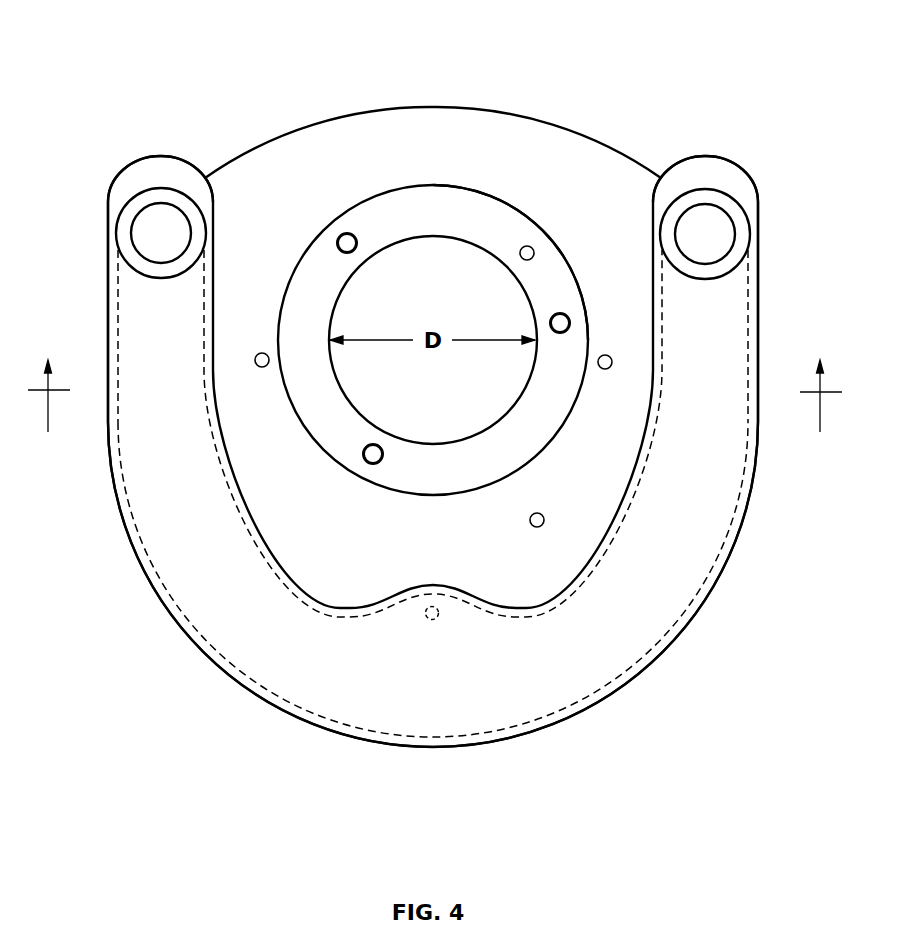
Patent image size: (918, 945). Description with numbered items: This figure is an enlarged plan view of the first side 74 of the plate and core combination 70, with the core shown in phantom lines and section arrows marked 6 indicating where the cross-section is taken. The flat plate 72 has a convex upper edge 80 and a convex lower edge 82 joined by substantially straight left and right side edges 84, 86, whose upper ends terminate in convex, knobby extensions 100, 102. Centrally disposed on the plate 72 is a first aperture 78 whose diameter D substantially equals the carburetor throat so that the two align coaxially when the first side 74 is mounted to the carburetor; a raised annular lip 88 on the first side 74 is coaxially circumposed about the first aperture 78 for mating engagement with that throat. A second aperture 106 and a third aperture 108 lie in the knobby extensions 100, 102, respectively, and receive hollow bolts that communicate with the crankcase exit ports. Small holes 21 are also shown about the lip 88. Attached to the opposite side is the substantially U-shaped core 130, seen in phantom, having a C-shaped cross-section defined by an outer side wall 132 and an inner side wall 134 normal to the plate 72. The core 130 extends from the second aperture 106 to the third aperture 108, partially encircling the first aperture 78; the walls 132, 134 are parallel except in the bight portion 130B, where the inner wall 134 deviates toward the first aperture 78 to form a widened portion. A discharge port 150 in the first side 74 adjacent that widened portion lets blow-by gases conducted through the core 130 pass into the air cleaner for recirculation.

The combination 70 is at (126, 70).
The flat plate 72 is at (315, 157).
The convex upper edge 80 is at (432, 108).
The first aperture 78 is at (468, 258).
The mounting holes 21 is at (527, 245).
The knobby extension 100 is at (717, 158).
The knobby extension 102 is at (122, 172).
The second aperture 106 is at (708, 240).
The third aperture 108 is at (147, 232).
The side edge 86 is at (108, 308).
The side edge 84 is at (757, 362).
The first side 74 is at (588, 270).
The raised annular lip 88 is at (558, 295).
The outer side wall 132 is at (748, 482).
The inner side wall 134 is at (637, 480).
The U-shaped core 130 is at (190, 583).
The convex lower edge 82 is at (302, 722).
The bight portion 130B is at (421, 749).
The discharge port 150 is at (429, 620).
The section line 6- 6 is at (435, 410).